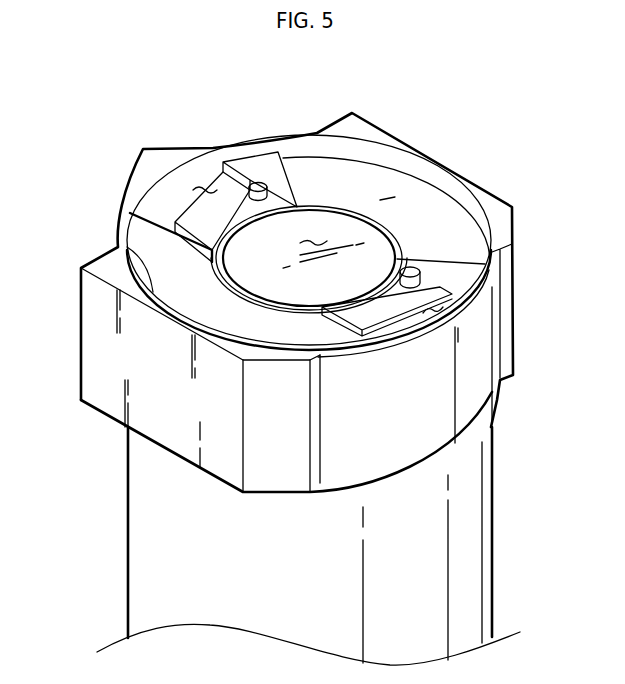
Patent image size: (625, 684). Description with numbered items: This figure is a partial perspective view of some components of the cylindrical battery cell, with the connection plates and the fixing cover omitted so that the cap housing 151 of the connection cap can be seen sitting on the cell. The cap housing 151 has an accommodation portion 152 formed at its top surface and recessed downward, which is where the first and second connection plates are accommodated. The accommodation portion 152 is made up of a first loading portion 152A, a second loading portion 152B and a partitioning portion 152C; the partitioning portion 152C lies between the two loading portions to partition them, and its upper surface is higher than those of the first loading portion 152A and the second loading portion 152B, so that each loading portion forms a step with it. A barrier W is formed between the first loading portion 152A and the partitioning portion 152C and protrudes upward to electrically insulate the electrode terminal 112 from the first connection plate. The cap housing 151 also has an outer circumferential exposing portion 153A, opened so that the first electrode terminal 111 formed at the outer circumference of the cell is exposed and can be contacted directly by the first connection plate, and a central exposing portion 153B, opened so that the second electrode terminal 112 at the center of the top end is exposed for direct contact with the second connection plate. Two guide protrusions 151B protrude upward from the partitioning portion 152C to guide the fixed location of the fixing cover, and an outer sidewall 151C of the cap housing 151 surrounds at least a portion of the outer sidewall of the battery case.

The first electrode terminal 111 is at (413, 326).
The second electrode terminal 112 is at (245, 228).
The cap housing 151 is at (129, 190).
The guide protrusion 151B is at (260, 183).
The outer sidewall 151C is at (413, 422).
The accommodation portion 152 is at (158, 252).
The first loading portion 152A is at (127, 247).
The second loading portion 152B is at (387, 197).
The partitioning portion 152C is at (207, 225).
The outer circumferential exposing portion 153A is at (200, 189).
The central exposing portion 153B is at (313, 242).
The barrier W is at (257, 282).